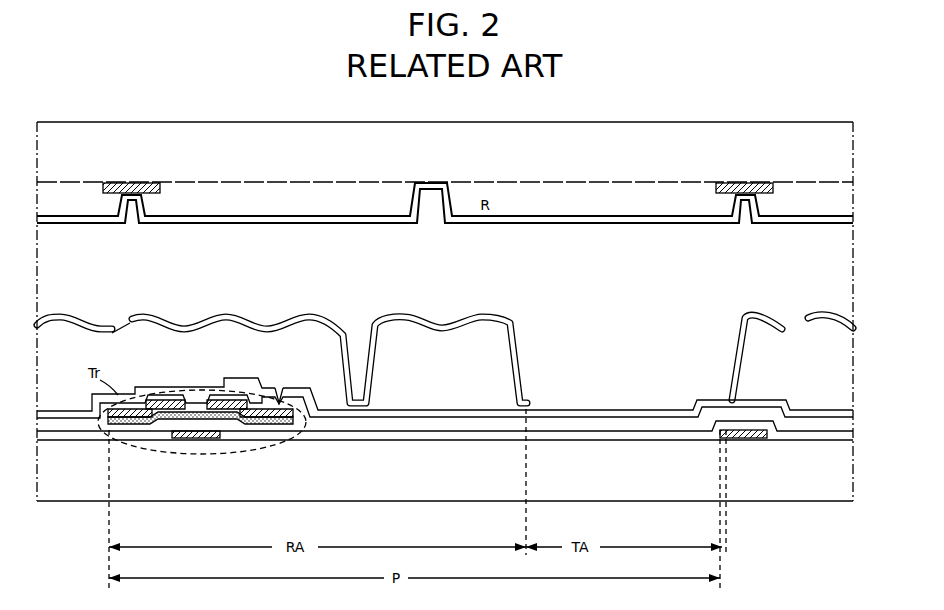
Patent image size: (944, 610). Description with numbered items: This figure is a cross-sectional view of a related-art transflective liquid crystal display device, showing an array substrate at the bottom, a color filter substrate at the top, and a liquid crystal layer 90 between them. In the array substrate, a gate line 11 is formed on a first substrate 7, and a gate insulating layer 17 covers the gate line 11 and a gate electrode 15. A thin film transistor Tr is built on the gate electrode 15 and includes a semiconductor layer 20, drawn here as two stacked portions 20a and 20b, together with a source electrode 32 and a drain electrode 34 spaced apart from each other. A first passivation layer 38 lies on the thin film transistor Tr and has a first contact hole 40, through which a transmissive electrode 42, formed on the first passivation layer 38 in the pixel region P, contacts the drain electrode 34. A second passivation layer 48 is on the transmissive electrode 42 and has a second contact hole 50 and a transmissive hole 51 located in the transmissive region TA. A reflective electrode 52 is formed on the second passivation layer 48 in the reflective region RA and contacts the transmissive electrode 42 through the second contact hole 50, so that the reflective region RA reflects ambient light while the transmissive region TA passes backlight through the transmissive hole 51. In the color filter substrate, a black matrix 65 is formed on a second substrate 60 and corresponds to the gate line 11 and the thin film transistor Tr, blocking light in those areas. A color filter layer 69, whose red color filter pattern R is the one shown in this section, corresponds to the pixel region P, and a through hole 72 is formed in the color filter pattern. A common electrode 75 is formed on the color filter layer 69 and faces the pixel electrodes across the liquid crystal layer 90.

The first substrate 7 is at (820, 479).
The gate line 11 is at (757, 441).
The gate electrode 15 is at (193, 440).
The gate insulating layer 17 is at (489, 437).
The semiconductor layer 20 is at (268, 480).
The ohmic contact layer 20a is at (245, 428).
The active layer 20b is at (278, 428).
The source electrode 32 is at (163, 400).
The drain electrode 34 is at (215, 400).
The first passivation layer 38 is at (563, 425).
The first contact hole 40 is at (280, 390).
The transmissive electrode 42 is at (593, 413).
The second passivation layer 48 is at (118, 318).
The second contact hole 50 is at (360, 318).
The transmissive hole 51 is at (650, 292).
The reflective electrode 52 is at (421, 318).
The second substrate 60 is at (734, 174).
The black matrix 65 is at (127, 198).
The color filter layer 69 is at (536, 195).
The through hole 72 is at (427, 222).
The common electrode 75 is at (597, 224).
The liquid crystal layer 90 is at (70, 268).